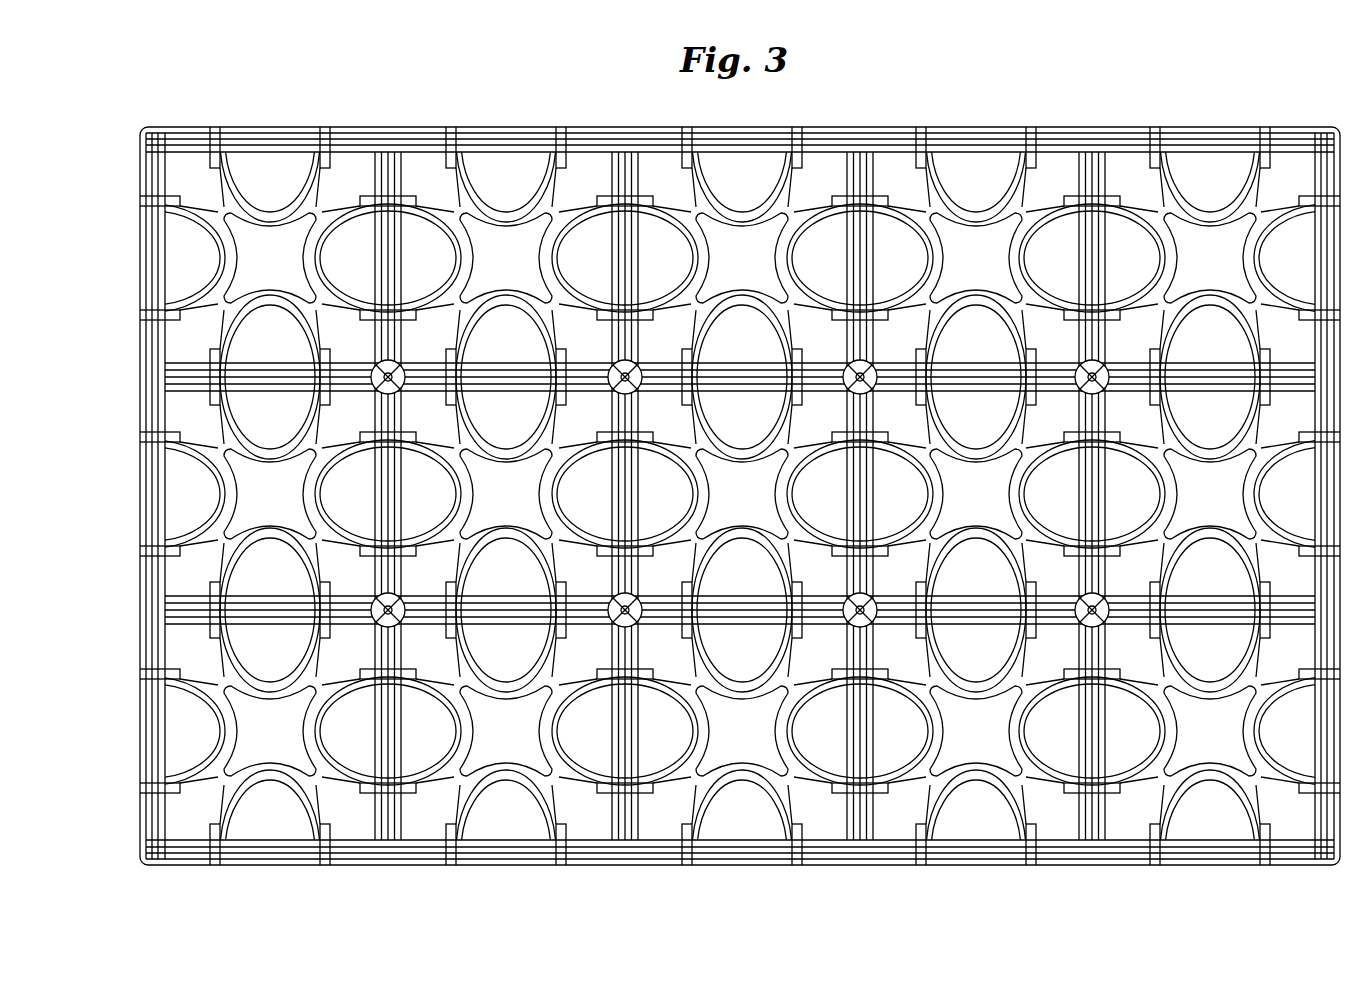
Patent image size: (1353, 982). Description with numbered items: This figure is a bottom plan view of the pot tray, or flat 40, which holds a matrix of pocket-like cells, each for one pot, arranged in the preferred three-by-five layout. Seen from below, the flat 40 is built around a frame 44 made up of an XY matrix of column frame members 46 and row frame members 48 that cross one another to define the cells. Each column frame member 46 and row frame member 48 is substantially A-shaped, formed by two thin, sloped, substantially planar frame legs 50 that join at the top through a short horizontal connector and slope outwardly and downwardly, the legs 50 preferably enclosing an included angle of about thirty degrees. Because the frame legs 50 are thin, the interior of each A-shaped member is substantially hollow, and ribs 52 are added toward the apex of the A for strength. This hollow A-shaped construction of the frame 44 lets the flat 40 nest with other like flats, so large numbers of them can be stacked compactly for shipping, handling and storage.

The flat 40 is at (1212, 115).
The frame 44 is at (343, 867).
The column frame member 46 is at (975, 598).
The row frame member 48 is at (403, 510).
The frame leg 50 is at (293, 150).
The rib 52 is at (457, 150).